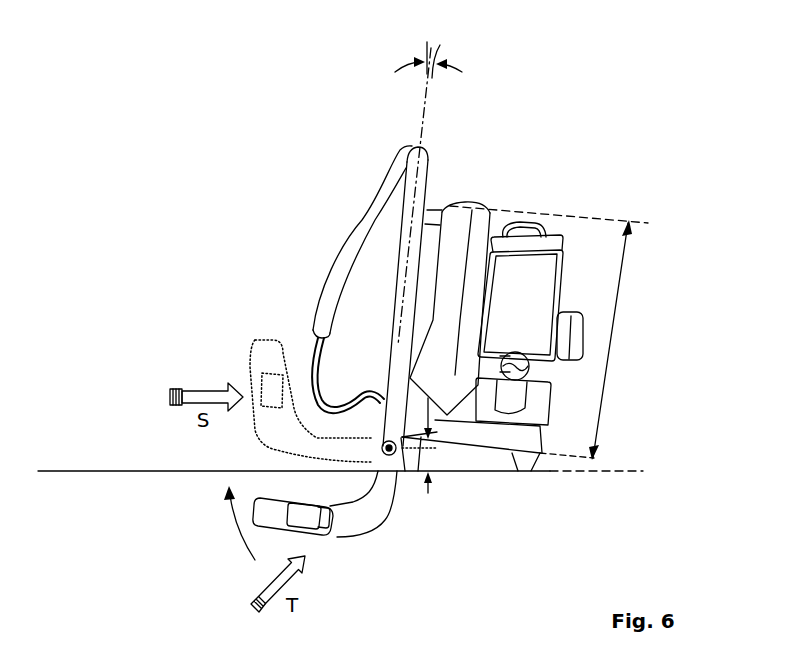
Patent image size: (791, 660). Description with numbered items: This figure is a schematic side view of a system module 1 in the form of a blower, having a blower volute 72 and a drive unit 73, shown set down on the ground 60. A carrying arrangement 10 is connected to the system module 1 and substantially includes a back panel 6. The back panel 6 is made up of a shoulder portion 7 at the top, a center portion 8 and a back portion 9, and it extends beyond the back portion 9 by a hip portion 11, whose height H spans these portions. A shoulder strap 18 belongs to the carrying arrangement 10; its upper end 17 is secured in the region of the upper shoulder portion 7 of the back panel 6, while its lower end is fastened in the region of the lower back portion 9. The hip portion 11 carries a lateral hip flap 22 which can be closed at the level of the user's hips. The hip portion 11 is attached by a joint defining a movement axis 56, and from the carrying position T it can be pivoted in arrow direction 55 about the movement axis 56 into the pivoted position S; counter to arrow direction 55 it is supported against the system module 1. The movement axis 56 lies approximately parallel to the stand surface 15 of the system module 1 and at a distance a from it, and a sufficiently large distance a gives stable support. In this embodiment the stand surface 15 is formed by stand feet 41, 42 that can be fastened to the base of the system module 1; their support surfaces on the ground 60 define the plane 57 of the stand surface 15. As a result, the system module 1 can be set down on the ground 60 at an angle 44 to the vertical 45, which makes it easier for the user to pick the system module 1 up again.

The system module 1 is at (524, 326).
The back panel 6 is at (415, 308).
The shoulder portion 7 is at (404, 195).
The center portion 8 is at (398, 304).
The back portion 9 is at (388, 385).
The carrying arrangement 10 is at (359, 280).
The hip portion 11 is at (335, 530).
The stand surface 15 is at (523, 472).
The upper end 17 is at (406, 148).
The shoulder strap 18 is at (364, 219).
The hip flap 22 is at (338, 526).
The stand foot 41 is at (424, 458).
The stand foot 42 is at (541, 465).
The angle 44 is at (440, 46).
The vertical 45 is at (426, 46).
The arrow direction 55 is at (231, 519).
The movement axis 56 is at (390, 452).
The plane 57 is at (603, 473).
The ground 60 is at (56, 466).
The blower volute 72 is at (474, 217).
The drive unit 73 is at (502, 366).